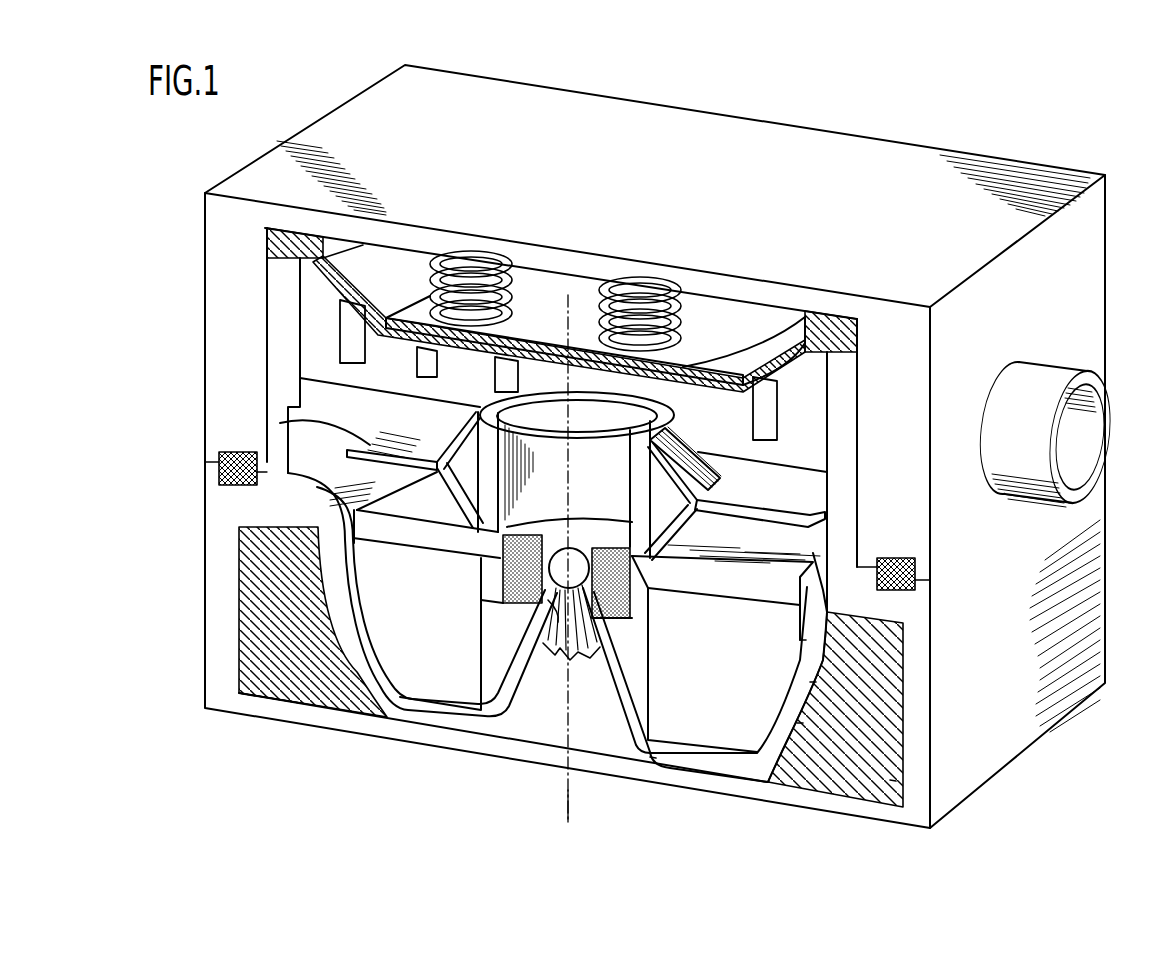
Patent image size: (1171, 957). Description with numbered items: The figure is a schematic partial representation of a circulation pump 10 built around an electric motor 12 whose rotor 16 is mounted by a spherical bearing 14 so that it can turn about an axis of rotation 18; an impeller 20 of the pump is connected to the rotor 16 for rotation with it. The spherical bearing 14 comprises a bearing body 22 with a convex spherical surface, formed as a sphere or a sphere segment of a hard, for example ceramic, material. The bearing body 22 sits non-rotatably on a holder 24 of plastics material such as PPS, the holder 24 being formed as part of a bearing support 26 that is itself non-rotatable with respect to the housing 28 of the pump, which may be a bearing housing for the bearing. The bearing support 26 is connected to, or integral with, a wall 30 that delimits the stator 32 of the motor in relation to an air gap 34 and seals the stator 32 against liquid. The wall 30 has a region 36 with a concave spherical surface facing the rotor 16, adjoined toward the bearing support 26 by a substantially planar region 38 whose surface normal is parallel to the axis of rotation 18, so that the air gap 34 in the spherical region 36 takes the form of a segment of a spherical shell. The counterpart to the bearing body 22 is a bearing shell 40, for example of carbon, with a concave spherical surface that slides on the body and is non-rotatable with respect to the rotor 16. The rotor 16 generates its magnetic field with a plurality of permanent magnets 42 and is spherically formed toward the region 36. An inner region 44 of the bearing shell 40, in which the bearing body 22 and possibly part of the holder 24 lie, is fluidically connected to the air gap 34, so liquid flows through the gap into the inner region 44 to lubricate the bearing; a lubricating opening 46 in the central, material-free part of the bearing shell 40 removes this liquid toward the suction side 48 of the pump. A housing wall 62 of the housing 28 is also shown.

The circulation pump 10 is at (1066, 146).
The electric motor 12 is at (710, 792).
The spherical bearing 14 is at (717, 487).
The rotor 16 is at (430, 677).
The axis of rotation 18 is at (568, 795).
The impeller 20 is at (377, 447).
The bearing body 22 is at (563, 567).
The holder 24 is at (603, 633).
The bearing support 26 is at (523, 700).
The housing 28 is at (307, 720).
The wall 30 is at (810, 682).
The stator 32 is at (890, 780).
The air gap 34 is at (802, 640).
The region 36 is at (797, 723).
The region 38 is at (653, 757).
The bearing shell 40 is at (632, 600).
The permanent magnets 42 is at (720, 720).
The inner region 44 is at (560, 617).
The lubricating opening 46 is at (640, 493).
The suction side 48 is at (628, 420).
The housing wall 62 is at (307, 343).